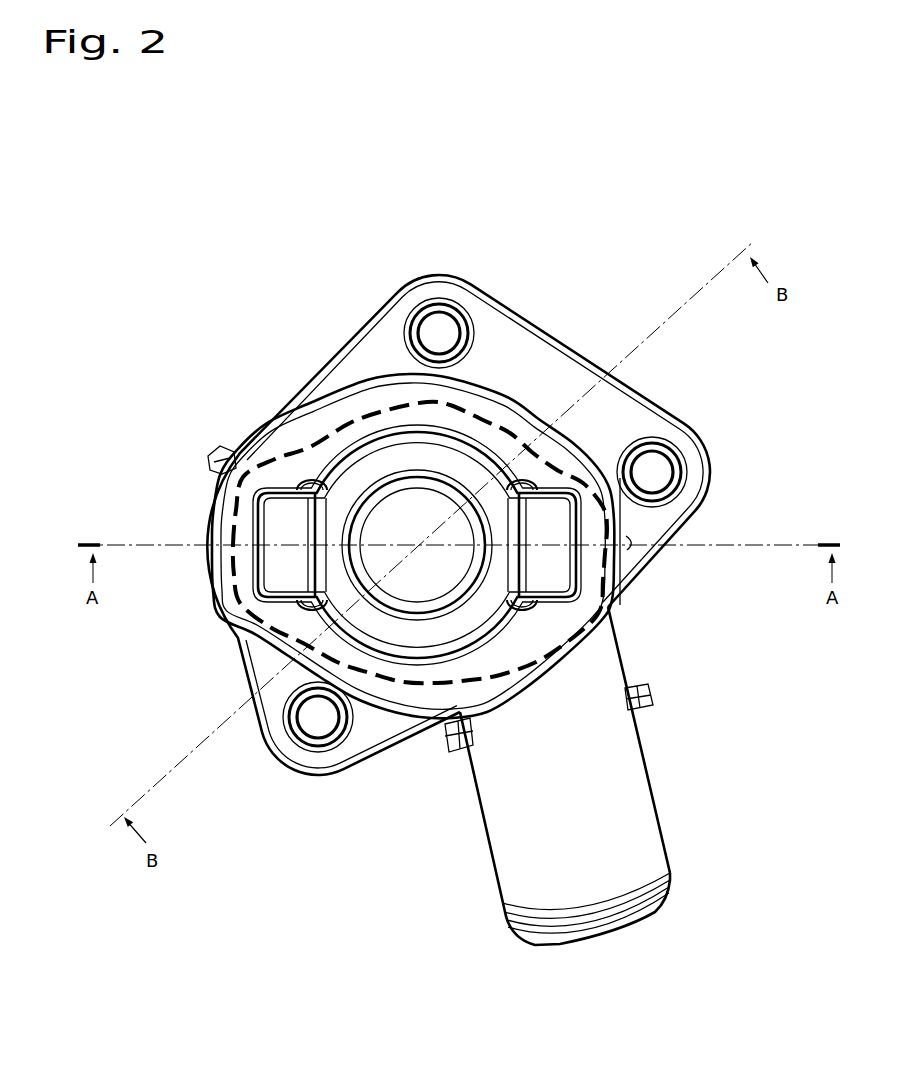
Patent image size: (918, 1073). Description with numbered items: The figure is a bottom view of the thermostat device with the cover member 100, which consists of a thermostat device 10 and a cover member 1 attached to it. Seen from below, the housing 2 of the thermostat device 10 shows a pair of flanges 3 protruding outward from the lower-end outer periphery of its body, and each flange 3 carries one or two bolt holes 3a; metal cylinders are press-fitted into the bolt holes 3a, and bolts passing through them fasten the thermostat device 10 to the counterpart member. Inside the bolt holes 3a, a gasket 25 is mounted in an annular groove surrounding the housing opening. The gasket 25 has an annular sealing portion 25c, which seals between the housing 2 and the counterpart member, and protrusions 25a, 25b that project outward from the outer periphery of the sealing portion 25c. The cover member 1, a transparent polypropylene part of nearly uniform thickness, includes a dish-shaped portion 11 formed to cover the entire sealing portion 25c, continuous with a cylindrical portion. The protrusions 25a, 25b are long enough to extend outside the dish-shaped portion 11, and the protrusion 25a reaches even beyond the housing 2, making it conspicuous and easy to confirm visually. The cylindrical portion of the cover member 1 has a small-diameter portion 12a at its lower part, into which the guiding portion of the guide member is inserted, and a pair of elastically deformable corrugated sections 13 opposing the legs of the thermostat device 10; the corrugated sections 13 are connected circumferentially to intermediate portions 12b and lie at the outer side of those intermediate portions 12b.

The thermostat device with the cover member 100 is at (122, 292).
The cover member 1 is at (517, 427).
The housing 2 is at (558, 776).
The flange 3 is at (567, 380).
The bolt hole 3a is at (473, 320).
The thermostat device 10 is at (441, 602).
The dish-shaped portion 11 is at (227, 513).
The small-diameter portion 12a is at (393, 470).
The intermediate portion 12b is at (337, 458).
The corrugated section 13 is at (223, 605).
The gasket 25 is at (478, 498).
The protrusion 25a is at (220, 448).
The protrusion 25b is at (635, 541).
The sealing portion 25c is at (333, 433).